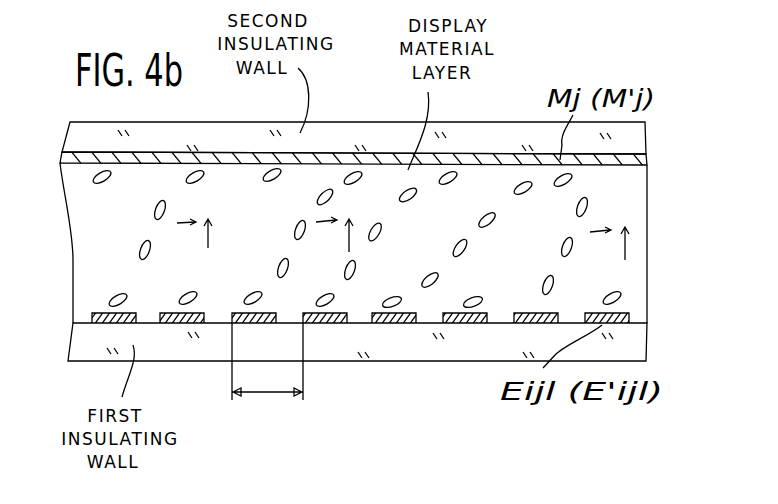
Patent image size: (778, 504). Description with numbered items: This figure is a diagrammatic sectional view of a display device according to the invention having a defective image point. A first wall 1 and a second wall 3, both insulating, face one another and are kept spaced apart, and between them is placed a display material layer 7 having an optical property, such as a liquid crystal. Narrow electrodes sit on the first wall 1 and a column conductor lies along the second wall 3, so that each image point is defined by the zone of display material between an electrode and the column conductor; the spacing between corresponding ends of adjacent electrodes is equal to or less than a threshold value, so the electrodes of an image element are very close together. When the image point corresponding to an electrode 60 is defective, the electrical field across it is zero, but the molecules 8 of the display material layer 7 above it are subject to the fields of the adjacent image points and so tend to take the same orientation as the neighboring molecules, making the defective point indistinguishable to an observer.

The first wall 1 is at (82, 340).
The second wall 3 is at (87, 138).
The display material layer 7 is at (353, 243).
The molecules 8 is at (573, 178).
The electrode 60 is at (397, 323).